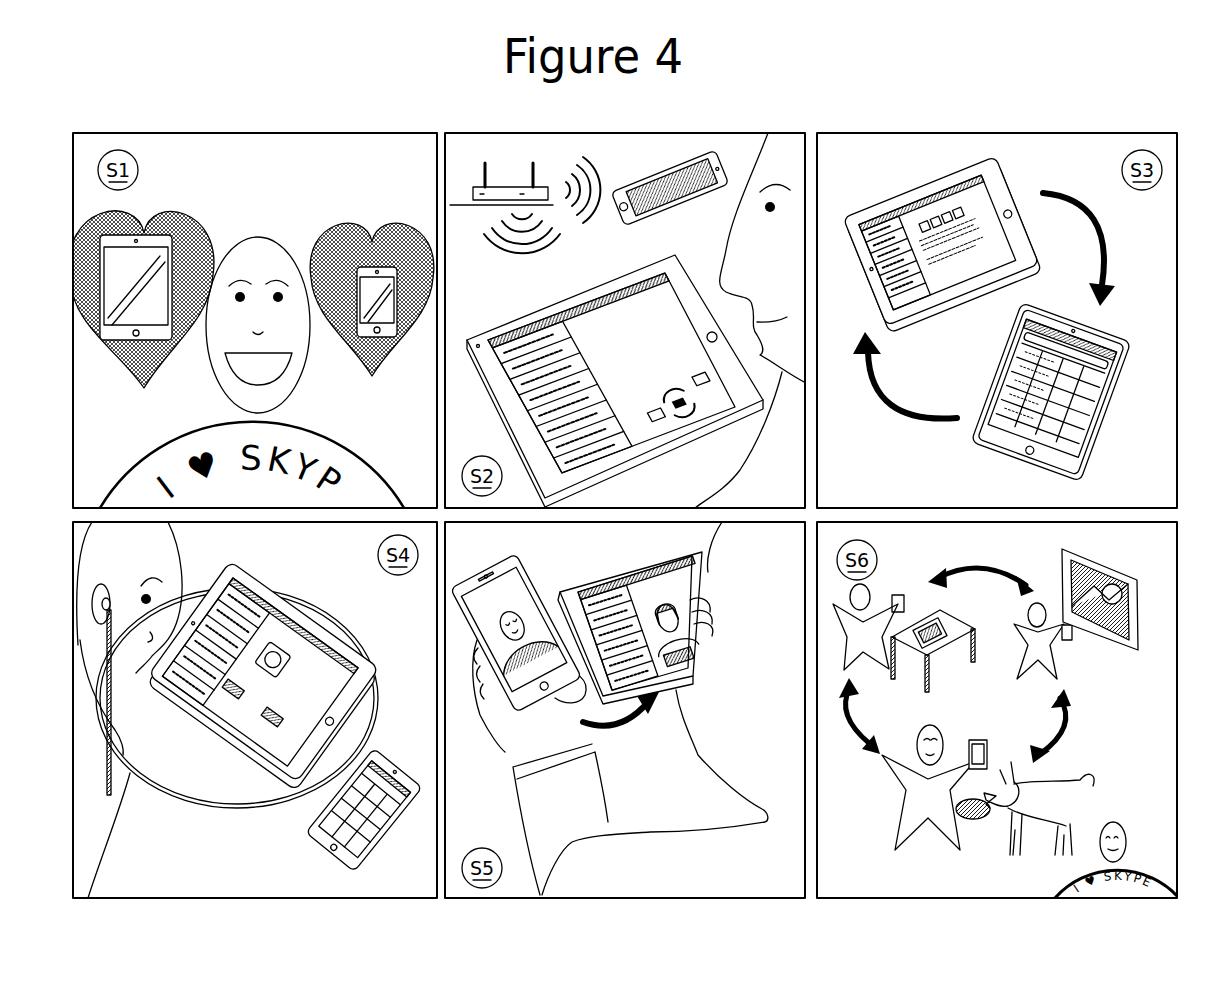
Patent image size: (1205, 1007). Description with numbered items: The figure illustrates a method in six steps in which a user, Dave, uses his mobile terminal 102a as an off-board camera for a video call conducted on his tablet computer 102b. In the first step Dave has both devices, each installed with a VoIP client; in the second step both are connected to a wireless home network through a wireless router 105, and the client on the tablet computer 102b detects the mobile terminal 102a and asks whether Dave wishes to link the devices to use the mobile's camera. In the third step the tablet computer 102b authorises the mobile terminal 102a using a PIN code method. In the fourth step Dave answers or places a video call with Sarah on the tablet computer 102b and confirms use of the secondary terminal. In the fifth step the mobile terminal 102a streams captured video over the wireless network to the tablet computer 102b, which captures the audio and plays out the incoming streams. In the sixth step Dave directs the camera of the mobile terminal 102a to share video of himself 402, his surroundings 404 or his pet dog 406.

The mobile terminal 102a is at (362, 340).
The tablet computer 102b is at (150, 343).
The wireless router 105 is at (507, 177).
The himself 402 is at (852, 657).
The surroundings 404 is at (1132, 654).
The pet dog 406 is at (1007, 848).